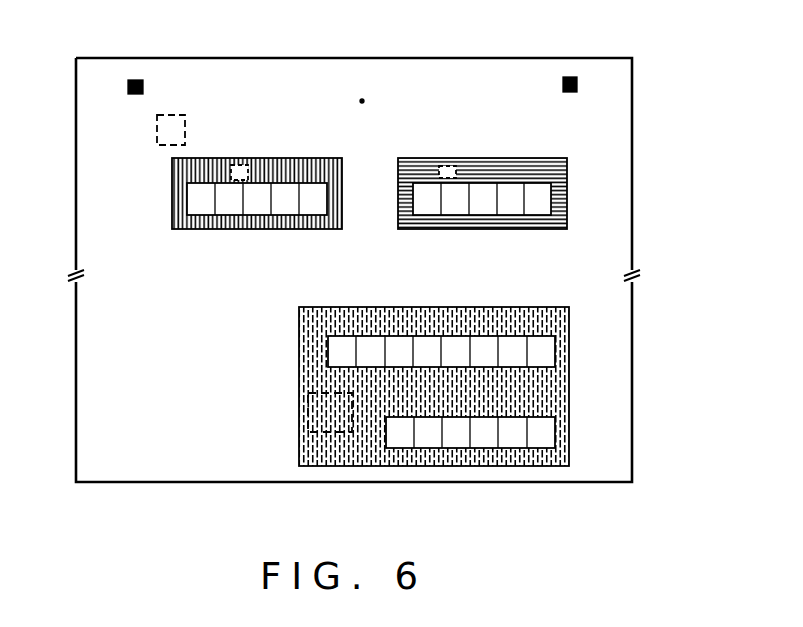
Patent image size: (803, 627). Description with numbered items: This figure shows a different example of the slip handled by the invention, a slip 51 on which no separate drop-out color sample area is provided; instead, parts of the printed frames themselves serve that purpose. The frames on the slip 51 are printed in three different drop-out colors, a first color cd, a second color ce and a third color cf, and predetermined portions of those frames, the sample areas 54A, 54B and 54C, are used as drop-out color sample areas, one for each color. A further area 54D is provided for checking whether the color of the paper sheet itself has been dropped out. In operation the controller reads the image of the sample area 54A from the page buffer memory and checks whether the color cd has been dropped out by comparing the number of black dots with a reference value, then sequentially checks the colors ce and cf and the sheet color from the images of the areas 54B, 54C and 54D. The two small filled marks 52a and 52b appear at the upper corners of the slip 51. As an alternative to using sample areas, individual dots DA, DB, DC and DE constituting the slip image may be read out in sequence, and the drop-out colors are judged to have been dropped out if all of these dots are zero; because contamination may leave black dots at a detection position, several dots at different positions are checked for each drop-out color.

The slip 51 is at (468, 57).
The indicator mark 52a is at (143, 87).
The indicator mark 52b is at (562, 84).
The drop-out color sample area 54A is at (233, 163).
The drop-out color sample area 54B is at (444, 164).
The drop-out color sample area 54C is at (307, 394).
The paper sheet color check area 54D is at (156, 119).
The dot DA is at (362, 101).
The dot DB is at (326, 171).
The dot DC is at (531, 172).
The dot DE is at (540, 320).
The drop-out color cd is at (185, 229).
The drop-out color ce is at (457, 229).
The drop-out color cf is at (372, 466).